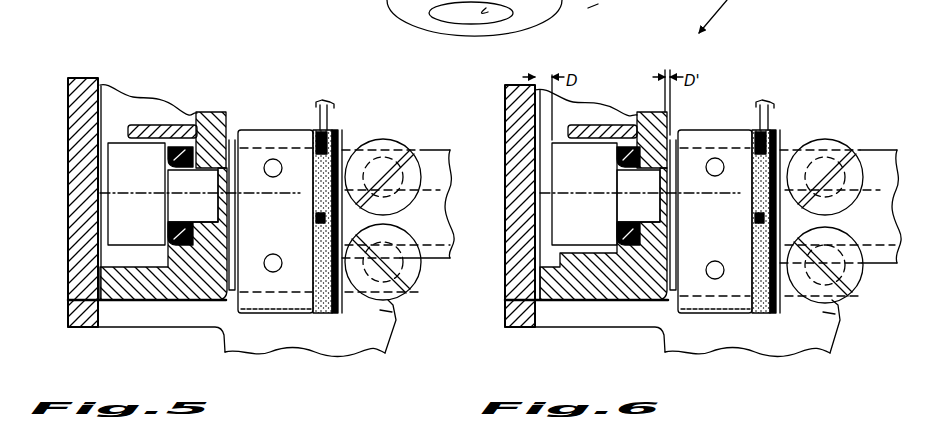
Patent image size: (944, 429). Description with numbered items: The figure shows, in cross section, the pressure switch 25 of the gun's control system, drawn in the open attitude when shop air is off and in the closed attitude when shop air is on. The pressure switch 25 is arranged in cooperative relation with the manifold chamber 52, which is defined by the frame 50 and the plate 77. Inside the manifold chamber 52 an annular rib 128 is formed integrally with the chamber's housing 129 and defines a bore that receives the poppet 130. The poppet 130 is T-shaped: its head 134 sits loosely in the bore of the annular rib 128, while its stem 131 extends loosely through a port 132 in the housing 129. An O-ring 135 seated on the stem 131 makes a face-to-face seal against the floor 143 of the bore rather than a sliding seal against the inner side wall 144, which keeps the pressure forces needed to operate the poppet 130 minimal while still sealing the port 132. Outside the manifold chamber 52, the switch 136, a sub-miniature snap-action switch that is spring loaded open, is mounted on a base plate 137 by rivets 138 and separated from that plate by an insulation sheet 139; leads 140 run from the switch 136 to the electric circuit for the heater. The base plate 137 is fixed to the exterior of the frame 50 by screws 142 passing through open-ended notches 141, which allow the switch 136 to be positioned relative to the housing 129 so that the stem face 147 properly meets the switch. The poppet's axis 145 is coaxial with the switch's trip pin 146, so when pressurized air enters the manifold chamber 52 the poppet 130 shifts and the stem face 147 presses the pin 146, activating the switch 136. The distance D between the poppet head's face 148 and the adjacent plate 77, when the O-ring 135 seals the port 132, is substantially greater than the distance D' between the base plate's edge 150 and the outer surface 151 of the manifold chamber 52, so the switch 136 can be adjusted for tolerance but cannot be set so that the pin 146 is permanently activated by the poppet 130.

In FIG. 5, the pressure switch 25 is at (261, 62).
In FIG. 5, the frame 50 is at (397, 333).
In FIG. 6, the frame 50 is at (840, 337).
In FIG. 5, the manifold chamber 52 is at (132, 97).
In FIG. 6, the manifold chamber 52 is at (590, 107).
In FIG. 5, the plate 77 is at (86, 78).
In FIG. 6, the plate 77 is at (520, 86).
In FIG. 5, the annular rib 128 is at (150, 130).
In FIG. 6, the annular rib 128 is at (608, 128).
In FIG. 5, the housing 129 is at (212, 120).
In FIG. 6, the housing 129 is at (640, 113).
In FIG. 5, the poppet 130 is at (117, 234).
In FIG. 6, the poppet 130 is at (587, 243).
In FIG. 5, the stem 131 is at (207, 211).
In FIG. 6, the stem 131 is at (657, 210).
In FIG. 5, the port 132 is at (213, 223).
In FIG. 6, the port 132 is at (653, 228).
In FIG. 5, the head 134 is at (125, 245).
In FIG. 6, the head 134 is at (558, 268).
In FIG. 5, the O-ring 135 is at (213, 132).
In FIG. 6, the O-ring 135 is at (668, 128).
In FIG. 5, the switch 136 is at (282, 315).
In FIG. 6, the switch 136 is at (718, 315).
In FIG. 5, the base plate 137 is at (353, 313).
In FIG. 6, the base plate 137 is at (790, 153).
In FIG. 5, the rivets 138 is at (278, 268).
In FIG. 6, the rivets 138 is at (716, 176).
In FIG. 5, the insulation sheet 139 is at (326, 313).
In FIG. 6, the insulation sheet 139 is at (768, 313).
In FIG. 5, the leads 140 is at (334, 104).
In FIG. 6, the leads 140 is at (775, 93).
In FIG. 5, the open-ended notches 141 is at (448, 190).
In FIG. 6, the open-ended notches 141 is at (862, 283).
In FIG. 5, the screws 142 is at (415, 260).
In FIG. 6, the screws 142 is at (853, 160).
In FIG. 5, the floor 143 is at (217, 235).
In FIG. 6, the floor 143 is at (667, 252).
In FIG. 5, the inner side wall 144 is at (152, 252).
In FIG. 6, the inner side wall 144 is at (627, 253).
In FIG. 5, the axis 145 is at (152, 178).
In FIG. 6, the axis 145 is at (600, 178).
In FIG. 5, the trip pin 146 is at (211, 200).
In FIG. 6, the trip pin 146 is at (656, 200).
In FIG. 5, the stem face 147 is at (242, 183).
In FIG. 6, the stem face 147 is at (680, 188).
In FIG. 5, the poppet head face 148 is at (107, 193).
In FIG. 6, the poppet head face 148 is at (553, 230).
In FIG. 5, the base plate edge 150 is at (240, 152).
In FIG. 6, the base plate edge 150 is at (680, 163).
In FIG. 5, the outer surface 151 is at (232, 145).
In FIG. 6, the outer surface 151 is at (670, 150).